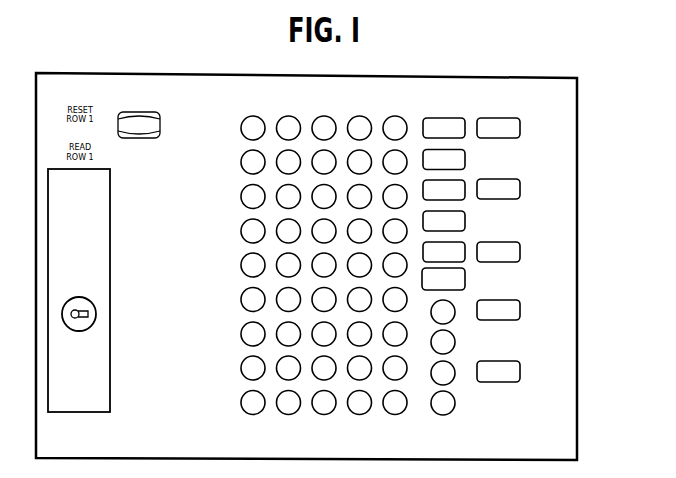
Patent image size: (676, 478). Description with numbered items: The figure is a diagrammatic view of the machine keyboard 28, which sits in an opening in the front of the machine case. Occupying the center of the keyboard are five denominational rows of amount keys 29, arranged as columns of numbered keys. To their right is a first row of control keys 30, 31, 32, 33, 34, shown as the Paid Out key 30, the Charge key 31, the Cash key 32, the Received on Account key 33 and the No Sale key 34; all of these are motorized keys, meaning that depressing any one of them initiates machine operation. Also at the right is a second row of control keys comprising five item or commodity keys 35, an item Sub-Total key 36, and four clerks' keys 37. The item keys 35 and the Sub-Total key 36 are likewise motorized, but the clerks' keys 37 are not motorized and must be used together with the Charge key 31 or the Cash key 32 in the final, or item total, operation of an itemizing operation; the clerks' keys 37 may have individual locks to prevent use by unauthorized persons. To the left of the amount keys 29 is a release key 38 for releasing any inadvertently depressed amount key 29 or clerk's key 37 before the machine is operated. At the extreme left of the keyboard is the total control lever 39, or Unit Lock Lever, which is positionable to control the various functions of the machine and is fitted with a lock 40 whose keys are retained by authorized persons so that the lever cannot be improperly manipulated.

The machine keyboard 28 is at (232, 75).
The amount keys 29 is at (286, 117).
The control key 30 is at (520, 129).
The Charge key 31 is at (520, 190).
The Cash key 32 is at (520, 255).
The control key 33 is at (520, 310).
The control key 34 is at (520, 370).
The item keys 35 is at (423, 120).
The item Sub-Total key 36 is at (465, 281).
The clerks' keys 37 is at (455, 318).
The release key 38 is at (150, 111).
The total control lever 39 is at (100, 377).
The lock 40 is at (96, 306).